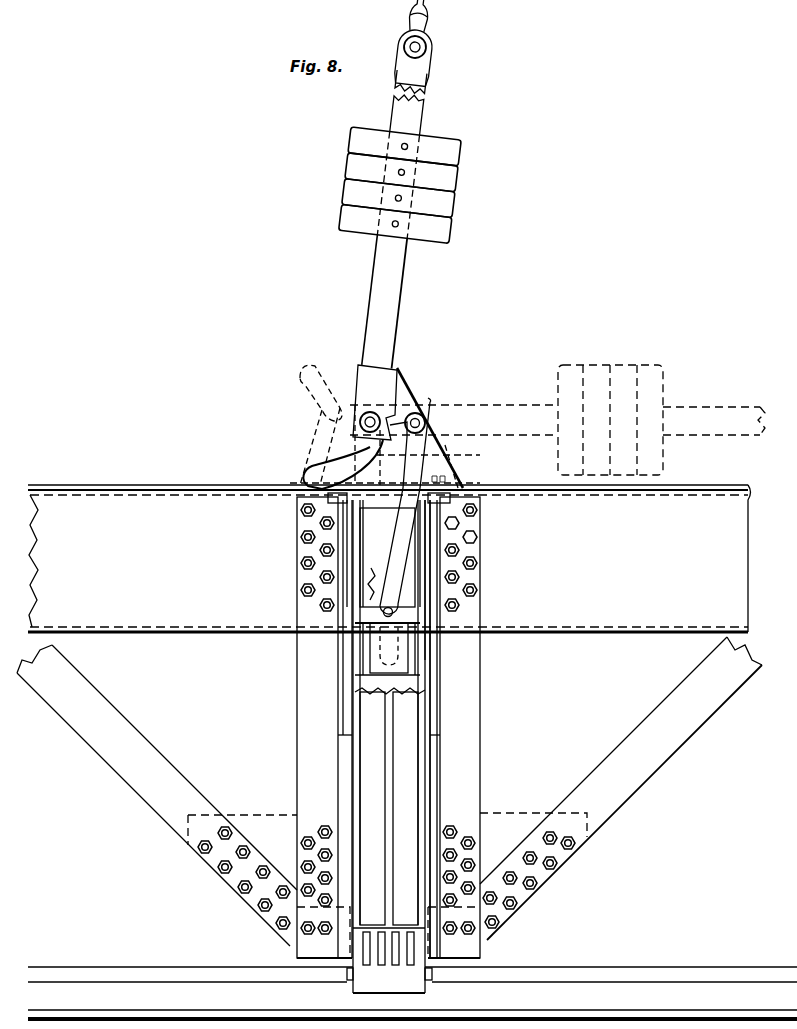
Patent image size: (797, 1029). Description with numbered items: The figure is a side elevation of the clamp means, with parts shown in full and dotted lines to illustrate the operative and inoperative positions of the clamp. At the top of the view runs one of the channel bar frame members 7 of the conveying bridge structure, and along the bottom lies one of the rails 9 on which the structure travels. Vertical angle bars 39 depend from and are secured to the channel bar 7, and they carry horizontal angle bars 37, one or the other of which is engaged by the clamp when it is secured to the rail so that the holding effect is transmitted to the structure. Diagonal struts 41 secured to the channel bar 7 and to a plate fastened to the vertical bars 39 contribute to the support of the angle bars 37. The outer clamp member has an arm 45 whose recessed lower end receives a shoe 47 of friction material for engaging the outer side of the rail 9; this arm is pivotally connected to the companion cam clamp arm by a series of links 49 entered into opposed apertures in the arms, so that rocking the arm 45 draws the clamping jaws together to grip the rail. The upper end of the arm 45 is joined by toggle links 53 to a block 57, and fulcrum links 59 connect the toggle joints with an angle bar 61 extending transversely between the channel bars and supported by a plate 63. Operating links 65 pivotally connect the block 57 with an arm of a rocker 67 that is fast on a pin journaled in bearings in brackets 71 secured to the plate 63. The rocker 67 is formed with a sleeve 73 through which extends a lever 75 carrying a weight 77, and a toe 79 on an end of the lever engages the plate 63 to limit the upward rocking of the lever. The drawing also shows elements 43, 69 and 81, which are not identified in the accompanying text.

The channel bar frame members 7 is at (223, 502).
The rails 9 is at (165, 968).
The horizontal angle bars 37 is at (345, 930).
The vertical angle bars 39 is at (297, 693).
The diagonal struts 41 is at (125, 727).
The gusset plates 43 is at (250, 822).
The arm 45 is at (405, 768).
The shoe 47 is at (347, 982).
The links 49 is at (413, 955).
The toggle links 53 is at (362, 643).
The block 57 is at (387, 557).
The fulcrum links 59 is at (352, 532).
The angle bar 61 is at (427, 515).
The plate 63 is at (290, 487).
The operating links 65 is at (413, 472).
The rocker 67 is at (419, 419).
The pin 69 is at (374, 418).
The brackets 71 is at (440, 447).
The sleeve 73 is at (360, 378).
The lever 75 is at (388, 326).
The weight 77 is at (358, 188).
The toe 79 is at (313, 398).
The eye 81 is at (407, 14).